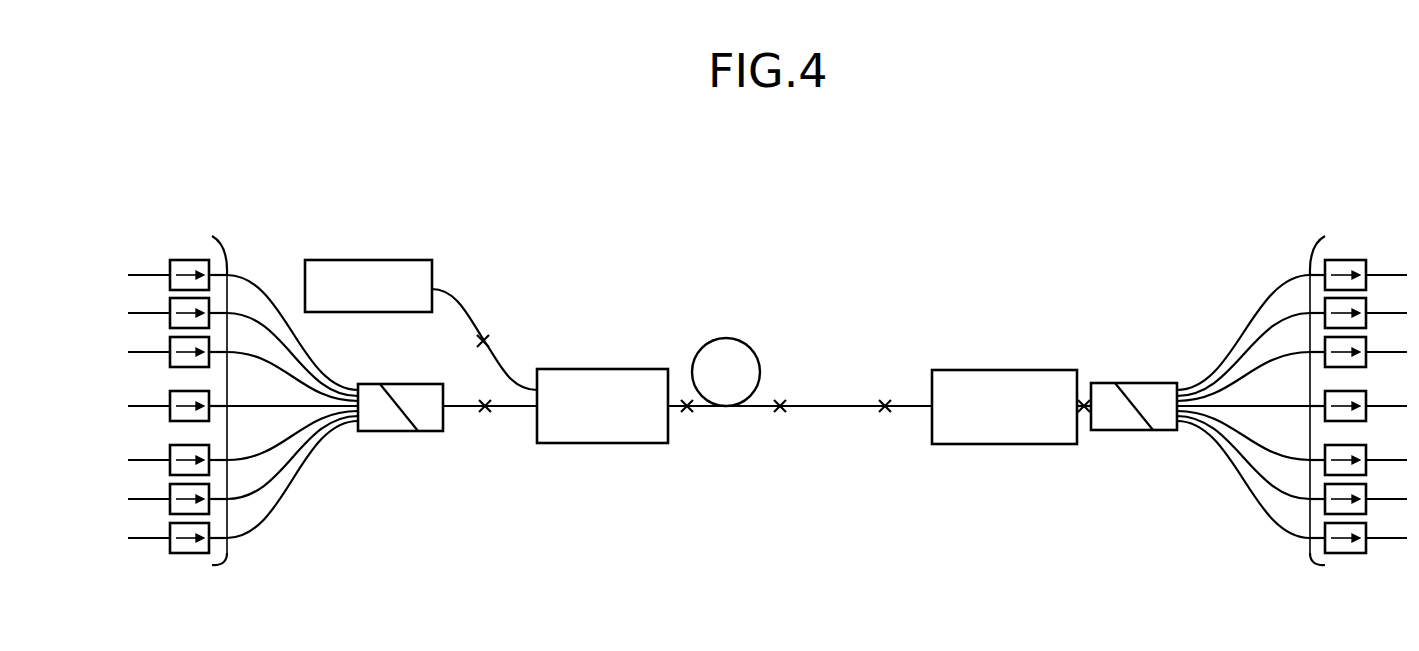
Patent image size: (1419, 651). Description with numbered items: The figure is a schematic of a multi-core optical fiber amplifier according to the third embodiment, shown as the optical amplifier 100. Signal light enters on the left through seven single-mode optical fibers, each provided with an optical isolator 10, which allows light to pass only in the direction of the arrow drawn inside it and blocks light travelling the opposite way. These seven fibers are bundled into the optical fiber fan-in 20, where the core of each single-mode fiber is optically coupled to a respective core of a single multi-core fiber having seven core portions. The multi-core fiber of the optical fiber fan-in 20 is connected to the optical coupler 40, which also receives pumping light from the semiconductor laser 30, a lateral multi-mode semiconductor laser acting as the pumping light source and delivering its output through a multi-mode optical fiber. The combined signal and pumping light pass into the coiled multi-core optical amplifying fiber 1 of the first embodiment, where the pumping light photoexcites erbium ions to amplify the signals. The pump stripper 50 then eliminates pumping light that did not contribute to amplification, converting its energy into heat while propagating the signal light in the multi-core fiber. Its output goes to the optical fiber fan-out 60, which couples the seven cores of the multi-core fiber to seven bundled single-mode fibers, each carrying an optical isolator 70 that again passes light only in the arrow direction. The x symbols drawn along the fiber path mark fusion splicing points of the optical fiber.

The optical amplifier 100 is at (1127, 217).
The optical isolators 10 is at (232, 268).
The optical fiber fan-in 20 is at (405, 431).
The semiconductor laser 30 is at (378, 260).
The optical coupler 40 is at (605, 367).
The multi-core optical amplifying fiber 1 is at (726, 336).
The pump stripper 50 is at (1020, 370).
The optical fiber fan-out 60 is at (1145, 383).
The optical isolators 70 is at (1306, 270).